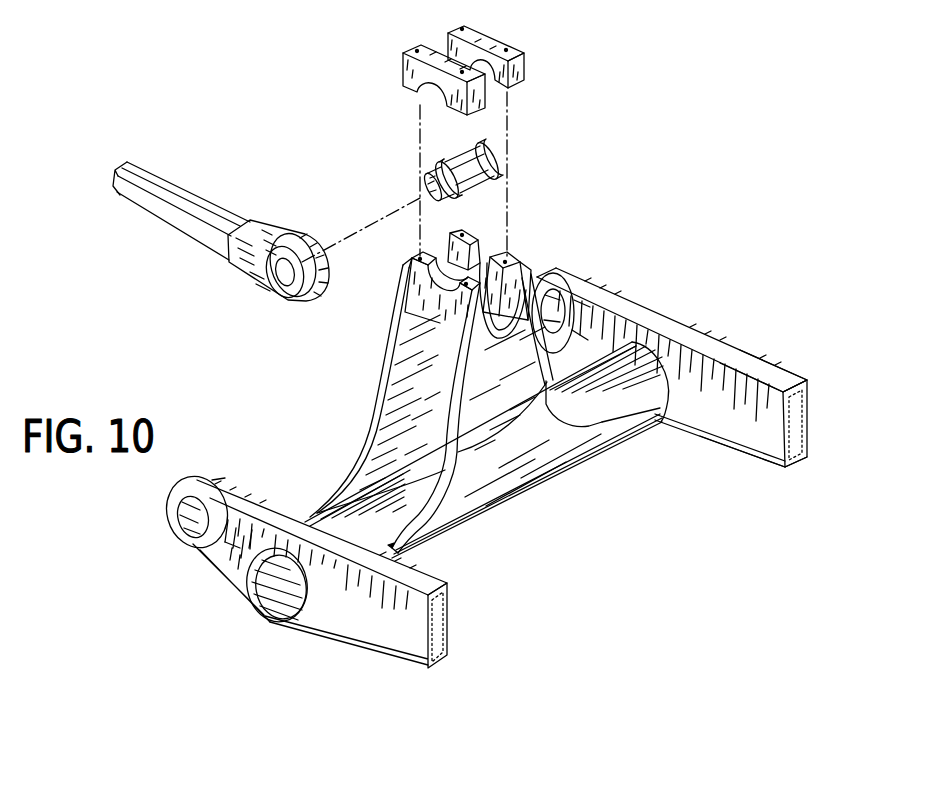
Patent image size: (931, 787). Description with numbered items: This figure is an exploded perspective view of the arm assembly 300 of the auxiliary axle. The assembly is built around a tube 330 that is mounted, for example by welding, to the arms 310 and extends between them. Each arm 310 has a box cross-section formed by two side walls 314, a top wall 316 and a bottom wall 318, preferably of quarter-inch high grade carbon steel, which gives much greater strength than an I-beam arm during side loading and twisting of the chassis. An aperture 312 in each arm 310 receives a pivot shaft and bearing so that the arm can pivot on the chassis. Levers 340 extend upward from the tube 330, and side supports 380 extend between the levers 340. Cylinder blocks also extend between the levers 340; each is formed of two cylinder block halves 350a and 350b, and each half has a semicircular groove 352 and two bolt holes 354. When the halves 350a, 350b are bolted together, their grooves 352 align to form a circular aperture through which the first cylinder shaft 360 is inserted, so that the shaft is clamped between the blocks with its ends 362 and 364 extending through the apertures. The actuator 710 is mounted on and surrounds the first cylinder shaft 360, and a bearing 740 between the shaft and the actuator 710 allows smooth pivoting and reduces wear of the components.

The arm assembly 300 is at (643, 268).
The arm 310 is at (686, 335).
The aperture 312 is at (178, 540).
The side wall 314 is at (800, 410).
The top wall 316 is at (788, 384).
The bottom wall 318 is at (788, 465).
The tube 330 is at (260, 605).
The lever 340 is at (510, 477).
The cylinder block half 350a is at (478, 34).
The cylinder block half 350b is at (506, 259).
The semicircular groove 352 is at (430, 97).
The bolt hole 354 is at (514, 51).
The first cylinder shaft 360 is at (499, 151).
The end of first cylinder shaft 362 is at (505, 173).
The end of first cylinder shaft 364 is at (421, 185).
The side support 380 is at (415, 387).
The actuator 710 is at (185, 210).
The bearing 740 is at (282, 302).